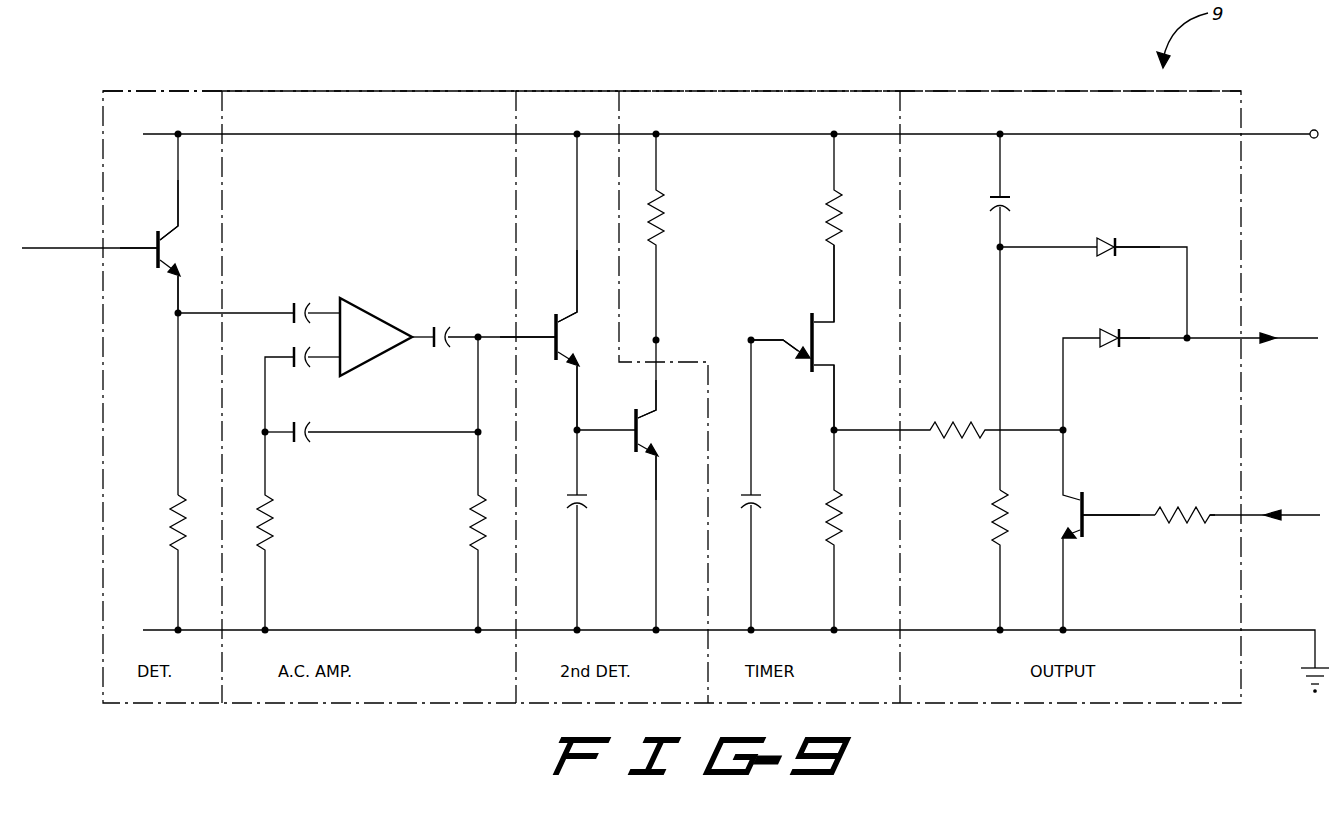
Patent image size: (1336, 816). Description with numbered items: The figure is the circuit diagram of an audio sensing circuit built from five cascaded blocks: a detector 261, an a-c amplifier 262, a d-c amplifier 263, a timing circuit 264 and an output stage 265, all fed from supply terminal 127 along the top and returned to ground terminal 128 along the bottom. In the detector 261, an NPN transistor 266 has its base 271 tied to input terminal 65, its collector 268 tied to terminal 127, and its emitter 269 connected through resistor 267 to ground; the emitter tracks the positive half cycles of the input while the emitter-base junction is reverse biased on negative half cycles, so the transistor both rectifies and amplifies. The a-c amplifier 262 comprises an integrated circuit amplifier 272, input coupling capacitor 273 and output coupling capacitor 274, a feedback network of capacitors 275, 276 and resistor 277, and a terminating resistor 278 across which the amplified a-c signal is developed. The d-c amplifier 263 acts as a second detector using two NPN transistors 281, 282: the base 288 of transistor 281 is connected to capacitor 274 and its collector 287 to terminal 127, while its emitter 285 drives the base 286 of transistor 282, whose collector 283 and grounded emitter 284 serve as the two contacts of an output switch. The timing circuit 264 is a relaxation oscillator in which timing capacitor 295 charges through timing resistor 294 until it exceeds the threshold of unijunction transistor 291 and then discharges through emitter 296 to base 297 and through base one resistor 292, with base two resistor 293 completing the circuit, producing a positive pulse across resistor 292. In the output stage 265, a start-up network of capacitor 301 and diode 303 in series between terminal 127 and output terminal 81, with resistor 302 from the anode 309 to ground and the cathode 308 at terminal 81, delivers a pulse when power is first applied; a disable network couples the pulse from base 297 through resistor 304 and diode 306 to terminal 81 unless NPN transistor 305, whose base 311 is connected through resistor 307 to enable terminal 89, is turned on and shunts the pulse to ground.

The input terminal 65 is at (64, 248).
The output terminal 81 is at (1296, 338).
The enable terminal 89 is at (1296, 514).
The supply terminal 127 is at (1314, 139).
The ground terminal 128 is at (1298, 667).
The detector 261 is at (160, 91).
The a-c amplifier 262 is at (394, 91).
The d-c amplifier 263 is at (586, 91).
The timing circuit 264 is at (782, 91).
The output stage 265 is at (1082, 91).
The NPN transistor 266 is at (166, 252).
The resistor 267 is at (172, 538).
The collector 268 is at (168, 228).
The emitter 269 is at (160, 274).
The base 271 is at (136, 252).
The integrated circuit amplifier 272 is at (388, 318).
The input coupling capacitor 273 is at (290, 310).
The output coupling capacitor 274 is at (430, 326).
The capacitor 275 is at (290, 442).
The capacitor 276 is at (292, 364).
The resistor 277 is at (270, 540).
The terminating resistor 278 is at (472, 538).
The NPN transistor 281 is at (562, 338).
The NPN transistor 282 is at (641, 430).
The collector 283 is at (650, 410).
The emitter 284 is at (640, 452).
The emitter 285 is at (563, 364).
The base 286 is at (604, 430).
The collector 287 is at (572, 318).
The base 288 is at (532, 333).
The unijunction transistor 291 is at (818, 342).
The base 1 resistor 292 is at (828, 538).
The base 2 resistor 293 is at (824, 214).
The timing resistor 294 is at (666, 212).
The timing capacitor 295 is at (762, 490).
The emitter 296 is at (794, 348).
The base 297 is at (838, 408).
The capacitor 301 is at (990, 200).
The resistor 302 is at (996, 526).
The diode 303 is at (1108, 238).
The resistor 304 is at (976, 426).
The NPN transistor 305 is at (1078, 516).
The diode 306 is at (1125, 379).
The resistor 307 is at (1160, 512).
The cathode 308 is at (1120, 248).
The anode 309 is at (1122, 334).
The base 311 is at (1112, 520).